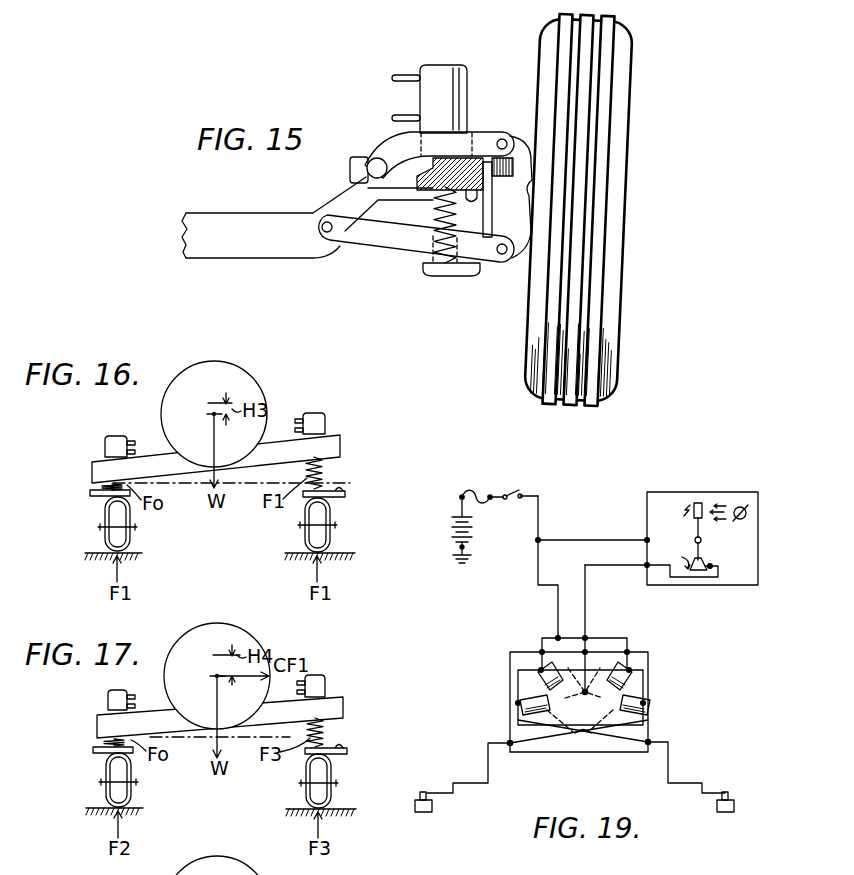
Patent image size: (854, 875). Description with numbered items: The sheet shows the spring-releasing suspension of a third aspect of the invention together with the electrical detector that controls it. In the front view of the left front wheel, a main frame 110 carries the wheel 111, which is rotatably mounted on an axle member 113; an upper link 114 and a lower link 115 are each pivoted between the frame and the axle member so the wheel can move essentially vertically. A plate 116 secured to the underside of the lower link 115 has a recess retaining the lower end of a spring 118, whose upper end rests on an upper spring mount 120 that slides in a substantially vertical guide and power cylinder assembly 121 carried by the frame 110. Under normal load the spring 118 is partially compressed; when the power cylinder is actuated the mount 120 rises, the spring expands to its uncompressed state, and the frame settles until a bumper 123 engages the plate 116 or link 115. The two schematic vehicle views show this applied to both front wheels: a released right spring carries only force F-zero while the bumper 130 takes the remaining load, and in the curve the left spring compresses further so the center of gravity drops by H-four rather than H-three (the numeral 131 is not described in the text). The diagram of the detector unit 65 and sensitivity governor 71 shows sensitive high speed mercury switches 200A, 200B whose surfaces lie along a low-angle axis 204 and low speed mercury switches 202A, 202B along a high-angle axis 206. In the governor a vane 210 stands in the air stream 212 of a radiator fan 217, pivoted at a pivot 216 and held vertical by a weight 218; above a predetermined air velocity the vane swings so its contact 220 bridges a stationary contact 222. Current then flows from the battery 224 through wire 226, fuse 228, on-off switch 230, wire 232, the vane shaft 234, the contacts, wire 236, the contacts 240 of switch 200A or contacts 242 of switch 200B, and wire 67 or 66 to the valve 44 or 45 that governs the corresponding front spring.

In FIG. 15, the frame 110 is at (288, 265).
In FIG. 15, the left front wheel 111 is at (550, 83).
In FIG. 15, the axle member 113 is at (513, 168).
In FIG. 15, the upper link 114 is at (483, 141).
In FIG. 15, the lower link 115 is at (378, 245).
In FIG. 15, the plate 116 is at (463, 272).
In FIG. 15, the spring 118 is at (452, 212).
In FIG. 15, the upper spring mount 120 is at (433, 191).
In FIG. 15, the guide and power cylinder assembly 121 is at (434, 72).
In FIG. 16, the guide and power cylinder assembly 121 is at (106, 437).
In FIG. 17, the guide and power cylinder assembly 121 is at (108, 698).
In FIG. 15, the bumper 123 is at (478, 198).
In FIG. 16, the bumper 130 is at (96, 489).
In FIG. 17, the bumper 130 is at (100, 742).
In FIG. 16, the spring plate 131 is at (341, 490).
In FIG. 17, the spring plate 131 is at (343, 748).
In FIG. 19, the battery 224 is at (452, 531).
In FIG. 19, the wire 226 is at (461, 499).
In FIG. 19, the fuse 228 is at (485, 487).
In FIG. 19, the on-off switch 230 is at (514, 491).
In FIG. 19, the wire 232 is at (618, 537).
In FIG. 19, the wire 236 is at (587, 612).
In FIG. 19, the sensitivity governor 71 is at (683, 491).
In FIG. 19, the vane 210 is at (700, 503).
In FIG. 19, the pivot 216 is at (695, 540).
In FIG. 19, the weight 218 is at (693, 573).
In FIG. 19, the vane shaft 234 is at (695, 549).
In FIG. 19, the contact 220 is at (704, 576).
In FIG. 19, the stationary contact 222 is at (717, 556).
In FIG. 19, the air stream 212 is at (724, 516).
In FIG. 19, the radiator fan 217 is at (744, 507).
In FIG. 19, the detector unit 65 is at (648, 674).
In FIG. 19, the low speed mercury switch 202A is at (552, 662).
In FIG. 19, the low speed mercury switch 202B is at (619, 662).
In FIG. 19, the axis 206 is at (588, 688).
In FIG. 19, the axis 204 is at (580, 718).
In FIG. 19, the contacts 240 is at (520, 703).
In FIG. 19, the contacts 242 is at (640, 702).
In FIG. 19, the high speed mercury switch 200A is at (525, 713).
In FIG. 19, the high speed mercury switch 200B is at (640, 712).
In FIG. 19, the wire 66 is at (481, 783).
In FIG. 19, the wire 67 is at (702, 783).
In FIG. 19, the valve 44 is at (420, 812).
In FIG. 19, the valve 45 is at (727, 812).